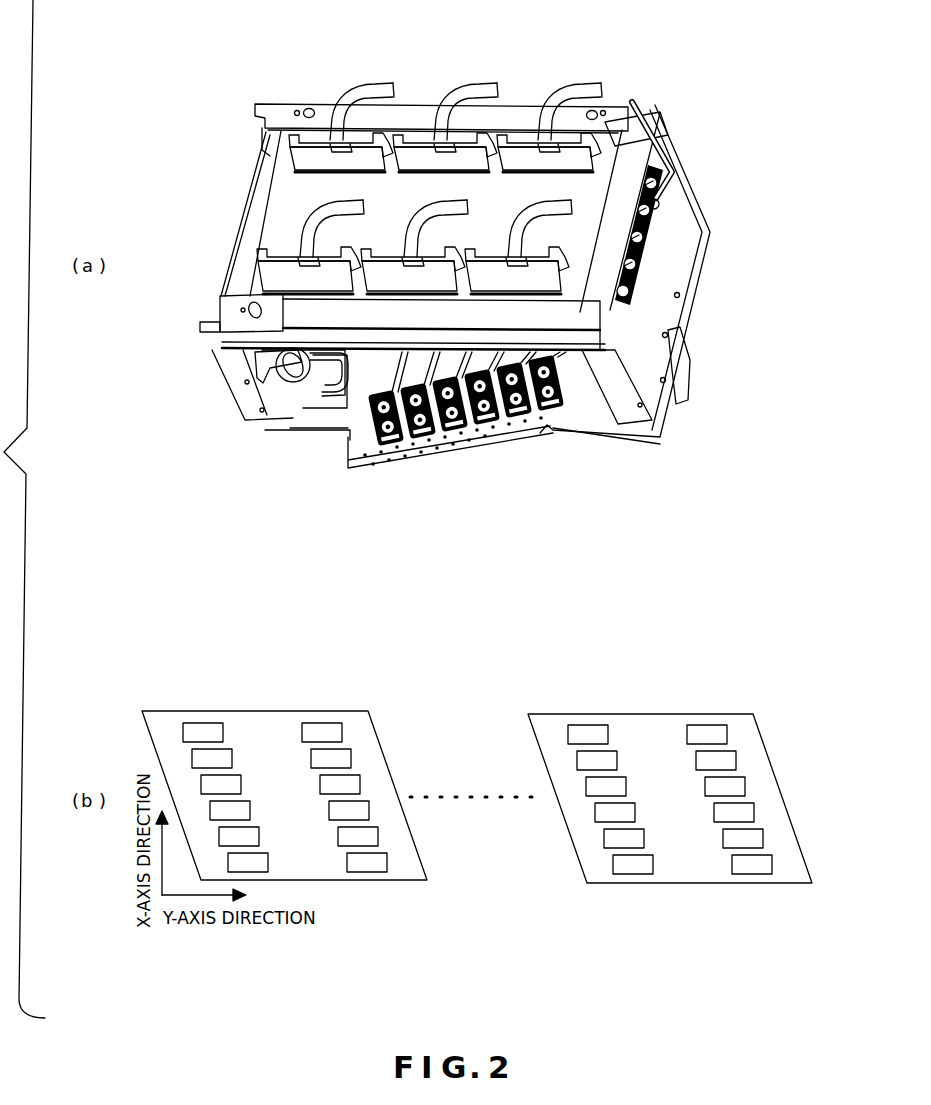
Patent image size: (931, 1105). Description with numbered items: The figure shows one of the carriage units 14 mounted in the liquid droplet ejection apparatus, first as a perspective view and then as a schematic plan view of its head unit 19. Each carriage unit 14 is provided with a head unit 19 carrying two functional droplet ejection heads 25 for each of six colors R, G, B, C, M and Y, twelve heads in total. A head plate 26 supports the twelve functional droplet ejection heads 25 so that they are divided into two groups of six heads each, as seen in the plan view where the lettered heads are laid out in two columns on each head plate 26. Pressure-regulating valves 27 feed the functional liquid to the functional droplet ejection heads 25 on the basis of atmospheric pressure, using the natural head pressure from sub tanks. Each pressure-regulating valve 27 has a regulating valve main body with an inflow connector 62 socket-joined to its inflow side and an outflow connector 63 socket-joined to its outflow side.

The carriage unit 14 is at (478, 442).
The head unit 19 is at (478, 483).
The functional droplet ejection head 25 is at (407, 438).
The head plate 26 is at (543, 430).
The pressure-regulating valve 27 is at (278, 390).
The inflow connector 62 is at (660, 210).
The outflow connector 63 is at (290, 366).